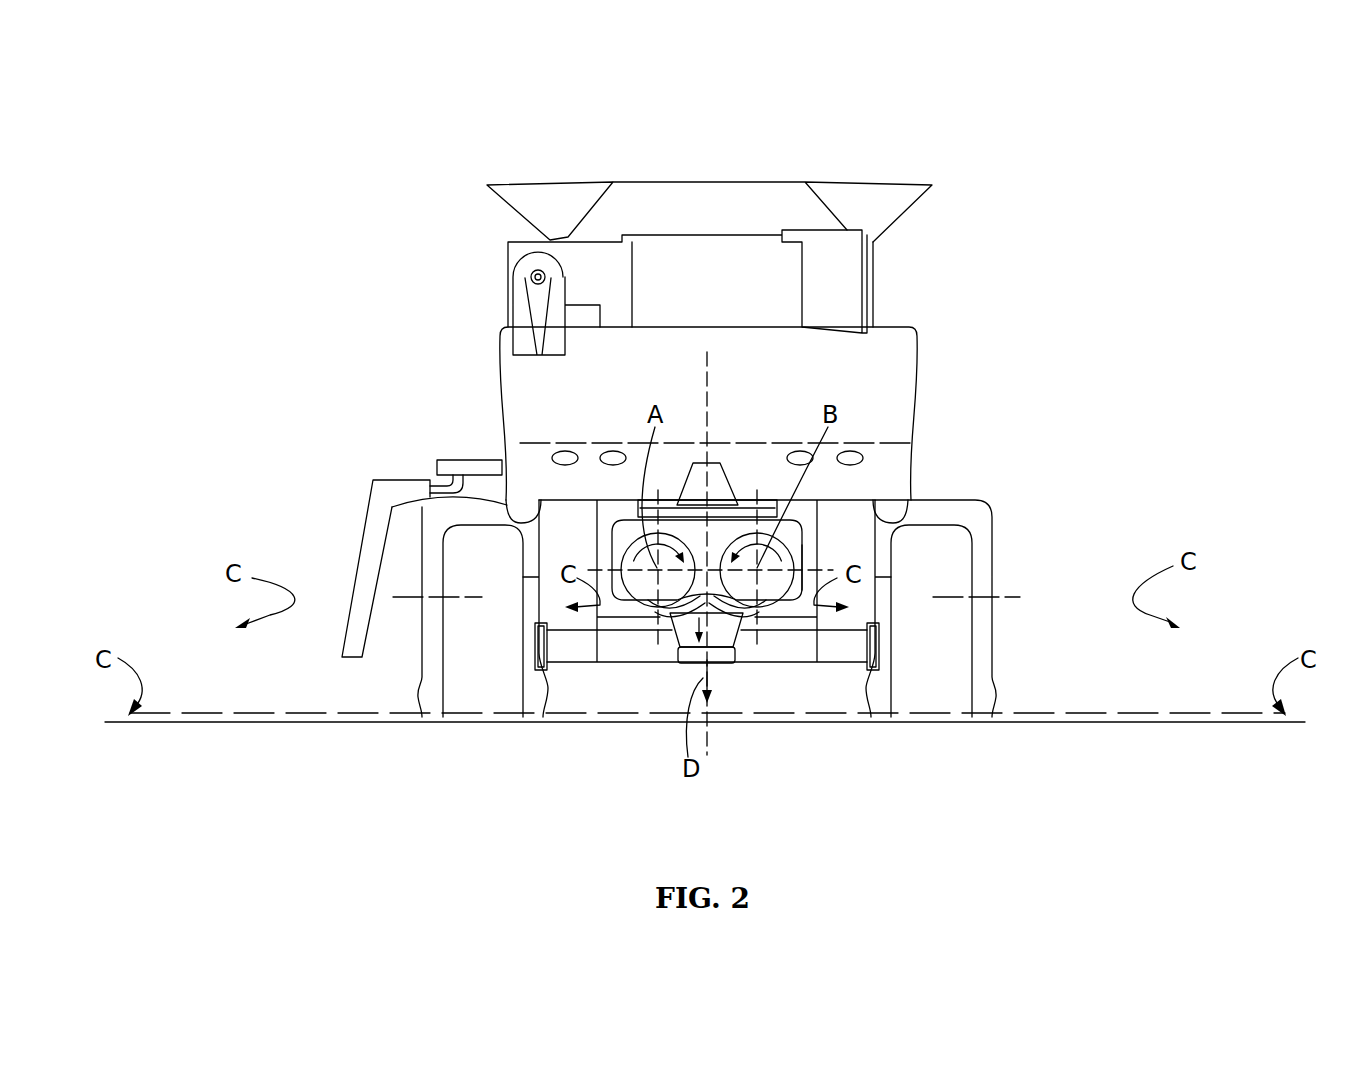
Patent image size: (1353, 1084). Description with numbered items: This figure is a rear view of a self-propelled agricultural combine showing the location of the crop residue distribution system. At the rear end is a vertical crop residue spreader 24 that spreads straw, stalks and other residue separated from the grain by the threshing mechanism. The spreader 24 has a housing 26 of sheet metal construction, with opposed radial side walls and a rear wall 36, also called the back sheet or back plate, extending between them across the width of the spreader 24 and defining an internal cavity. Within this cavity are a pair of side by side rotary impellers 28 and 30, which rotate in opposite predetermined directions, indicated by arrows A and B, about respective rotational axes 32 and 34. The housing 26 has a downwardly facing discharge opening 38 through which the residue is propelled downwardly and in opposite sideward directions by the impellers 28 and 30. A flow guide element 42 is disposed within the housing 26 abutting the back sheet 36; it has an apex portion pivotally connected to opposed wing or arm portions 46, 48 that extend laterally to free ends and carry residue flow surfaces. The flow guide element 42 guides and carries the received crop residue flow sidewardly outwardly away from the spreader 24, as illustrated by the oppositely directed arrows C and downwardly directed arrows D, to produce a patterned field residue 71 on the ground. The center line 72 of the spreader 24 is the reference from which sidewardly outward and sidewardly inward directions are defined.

The vertical crop residue spreader 24 is at (790, 540).
The housing 26 is at (612, 552).
The rotary impeller 28 is at (636, 518).
The rotary impeller 30 is at (805, 541).
The rotational axis 32 is at (657, 565).
The rotational axis 34 is at (802, 557).
The rear wall 36 is at (742, 502).
The discharge opening 38 is at (781, 605).
The flow guide element 42 is at (693, 620).
The wing or arm portion 46 is at (727, 603).
The wing or arm portion 48 is at (663, 608).
The patterned field residue 71 is at (1050, 712).
The center line 72 is at (707, 377).